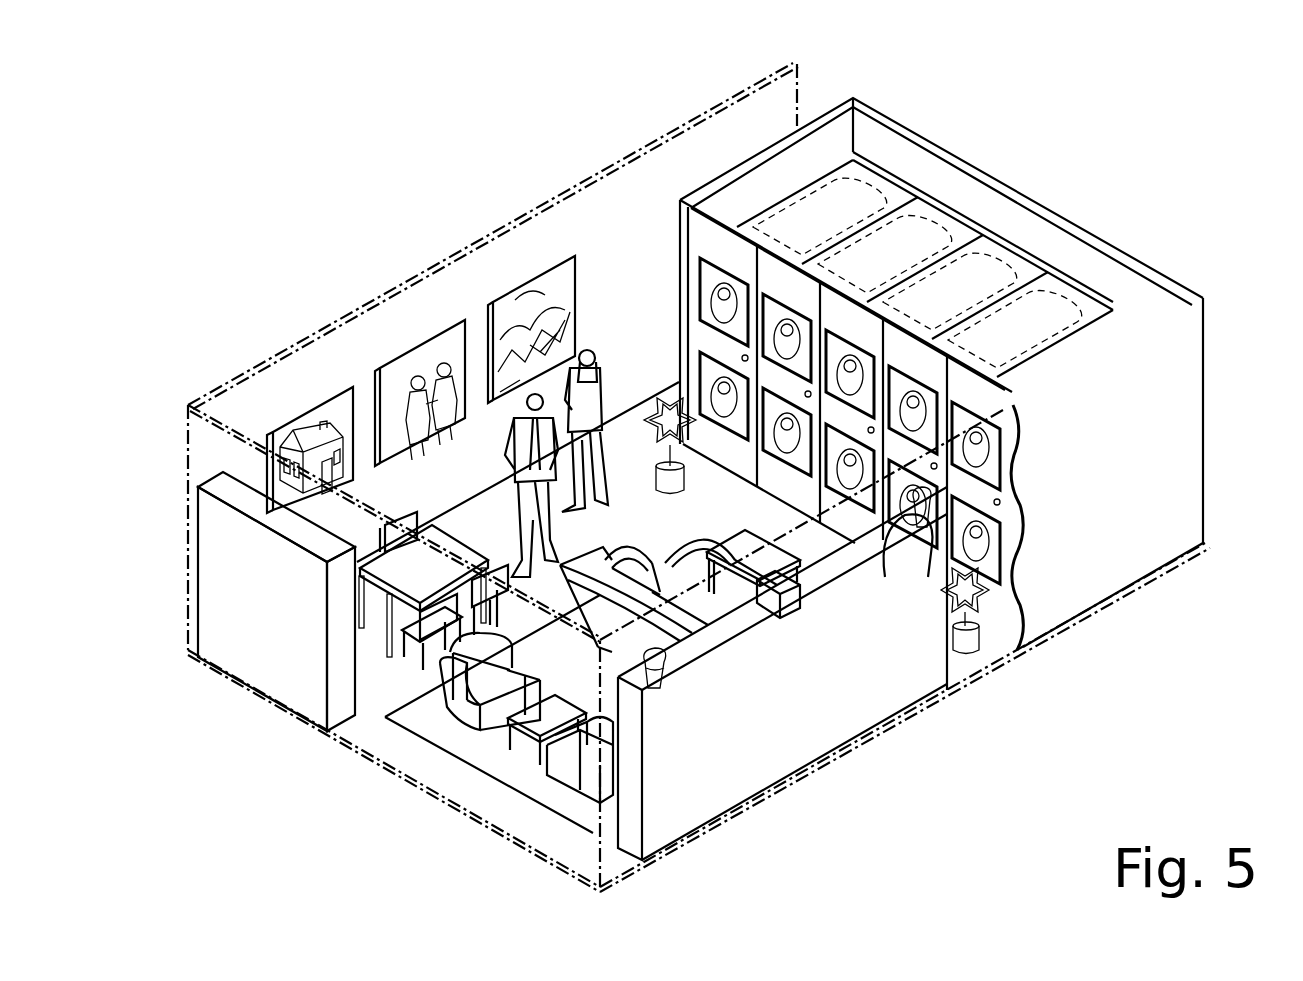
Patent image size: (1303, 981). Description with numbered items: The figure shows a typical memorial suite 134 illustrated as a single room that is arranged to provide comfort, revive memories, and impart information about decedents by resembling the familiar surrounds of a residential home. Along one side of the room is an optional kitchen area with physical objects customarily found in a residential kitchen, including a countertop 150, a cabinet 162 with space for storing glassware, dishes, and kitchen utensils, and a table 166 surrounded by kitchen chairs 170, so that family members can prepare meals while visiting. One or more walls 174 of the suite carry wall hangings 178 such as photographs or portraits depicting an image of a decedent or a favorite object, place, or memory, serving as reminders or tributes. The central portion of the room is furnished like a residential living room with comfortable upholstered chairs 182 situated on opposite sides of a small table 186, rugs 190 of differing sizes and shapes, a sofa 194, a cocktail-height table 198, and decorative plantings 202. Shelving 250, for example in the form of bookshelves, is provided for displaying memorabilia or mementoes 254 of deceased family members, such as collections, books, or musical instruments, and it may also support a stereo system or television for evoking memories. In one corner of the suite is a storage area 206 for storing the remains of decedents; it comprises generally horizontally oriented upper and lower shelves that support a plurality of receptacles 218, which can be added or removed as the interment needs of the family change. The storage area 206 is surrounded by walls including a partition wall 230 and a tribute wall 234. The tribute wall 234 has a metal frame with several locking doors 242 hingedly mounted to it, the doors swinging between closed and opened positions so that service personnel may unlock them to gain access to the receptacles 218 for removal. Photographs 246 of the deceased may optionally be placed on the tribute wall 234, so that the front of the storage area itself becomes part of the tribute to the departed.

The memorial suite 134 is at (970, 130).
The countertop 150 is at (370, 635).
The cabinet 162 is at (286, 615).
The table 166 is at (412, 595).
The kitchen chairs 170 is at (403, 520).
The walls 174 is at (638, 178).
The wall hangings 178 is at (510, 300).
The upholstered chairs 182 is at (465, 710).
The small table 186 is at (520, 723).
The rugs 190 is at (677, 563).
The sofa 194 is at (623, 620).
The cocktail-height table 198 is at (735, 545).
The decorative plantings 202 is at (653, 482).
The storage area 206 is at (1088, 246).
The receptacles 218 is at (860, 157).
The partition wall 230 is at (818, 110).
The tribute wall 234 is at (1020, 415).
The locking doors 242 is at (842, 313).
The photographs 246 is at (703, 270).
The shelving 250 is at (820, 687).
The memorabilia or mementoes 254 is at (930, 540).